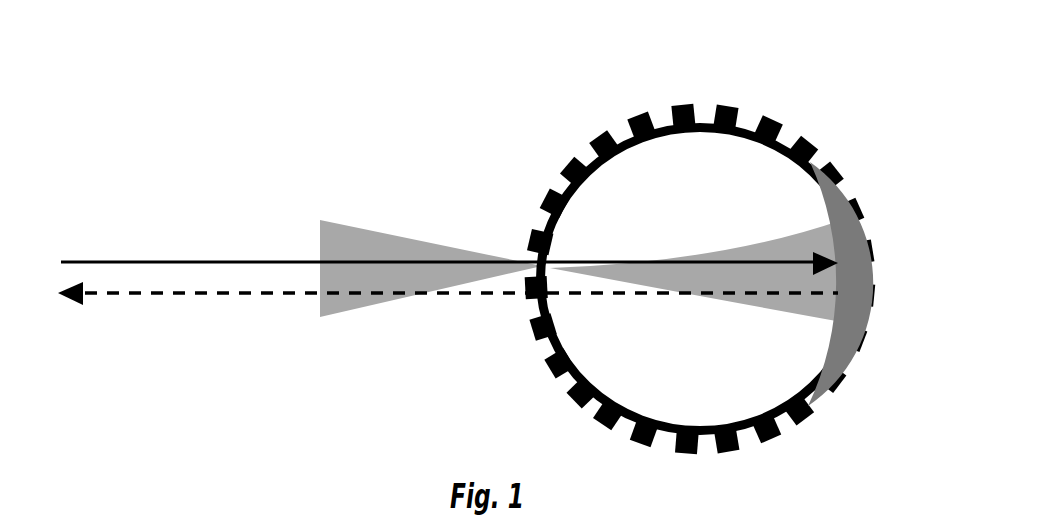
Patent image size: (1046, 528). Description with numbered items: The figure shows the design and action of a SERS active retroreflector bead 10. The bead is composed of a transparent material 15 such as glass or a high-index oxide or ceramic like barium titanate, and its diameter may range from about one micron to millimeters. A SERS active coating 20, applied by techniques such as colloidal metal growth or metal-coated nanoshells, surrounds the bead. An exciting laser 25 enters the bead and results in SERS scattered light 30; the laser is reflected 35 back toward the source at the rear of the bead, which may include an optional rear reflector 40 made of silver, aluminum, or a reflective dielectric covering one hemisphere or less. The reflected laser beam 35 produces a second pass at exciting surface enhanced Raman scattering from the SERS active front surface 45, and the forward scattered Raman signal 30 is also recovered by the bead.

The SERS active retroreflector bead 10 is at (611, 232).
The transparent material 15 is at (705, 373).
The SERS active coating 20 is at (783, 112).
The exciting laser 25 is at (93, 252).
The SERS scattered light 30 is at (730, 237).
The reflected laser beam 35 is at (112, 313).
The rear reflector 40 is at (848, 398).
The SERS active front surface 45 is at (388, 230).